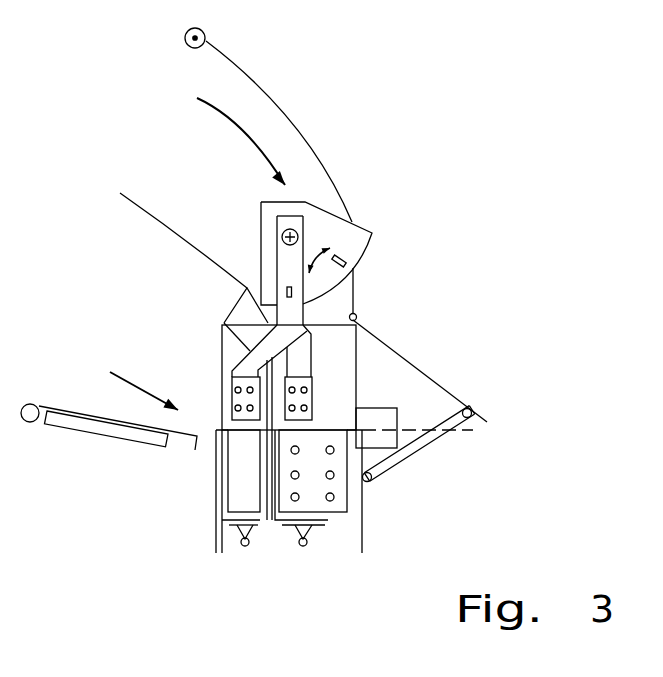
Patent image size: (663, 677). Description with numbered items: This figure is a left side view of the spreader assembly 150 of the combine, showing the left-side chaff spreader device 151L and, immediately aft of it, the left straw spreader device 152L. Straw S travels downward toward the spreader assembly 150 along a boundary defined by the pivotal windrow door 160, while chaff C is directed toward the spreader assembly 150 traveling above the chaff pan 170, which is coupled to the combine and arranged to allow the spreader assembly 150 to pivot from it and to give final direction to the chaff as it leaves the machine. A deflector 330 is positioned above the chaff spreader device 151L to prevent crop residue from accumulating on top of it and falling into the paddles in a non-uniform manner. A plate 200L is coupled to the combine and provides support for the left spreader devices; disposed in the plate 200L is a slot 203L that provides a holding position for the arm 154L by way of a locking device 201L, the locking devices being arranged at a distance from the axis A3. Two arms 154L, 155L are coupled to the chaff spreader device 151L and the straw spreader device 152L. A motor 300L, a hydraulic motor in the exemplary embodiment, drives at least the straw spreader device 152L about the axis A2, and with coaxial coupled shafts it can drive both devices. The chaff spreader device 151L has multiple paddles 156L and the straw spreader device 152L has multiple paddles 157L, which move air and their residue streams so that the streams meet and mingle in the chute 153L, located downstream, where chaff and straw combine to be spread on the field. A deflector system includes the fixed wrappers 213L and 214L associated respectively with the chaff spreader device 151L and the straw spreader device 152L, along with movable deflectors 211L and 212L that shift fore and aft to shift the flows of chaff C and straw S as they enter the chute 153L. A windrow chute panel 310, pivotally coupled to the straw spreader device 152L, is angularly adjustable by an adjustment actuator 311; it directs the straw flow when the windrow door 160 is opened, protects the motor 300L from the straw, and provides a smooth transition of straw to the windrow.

The spreader assembly 150 is at (490, 315).
The windrow door 160 is at (316, 125).
The straw S is at (227, 123).
The plate 200L is at (362, 227).
The axis A3 is at (283, 232).
The slot 203L is at (344, 257).
The locking device 201L is at (295, 293).
The deflector 330 is at (232, 300).
The arm 154L is at (227, 321).
The arm 155L is at (313, 367).
The motor 300L is at (377, 408).
The axis A2 is at (412, 428).
The windrow chute panel 310 is at (478, 410).
The adjustment actuator 311 is at (412, 452).
The chaff C is at (140, 385).
The chaff pan 170 is at (125, 423).
The chute 153L is at (215, 516).
The paddles 156L is at (222, 473).
The paddles 157L is at (347, 487).
The wrapper 213L is at (222, 555).
The movable deflector 211L is at (233, 530).
The wrapper 214L is at (273, 520).
The movable deflector 212L is at (315, 530).
The chaff spreader device 151L is at (248, 606).
The straw spreader device 152L is at (334, 609).